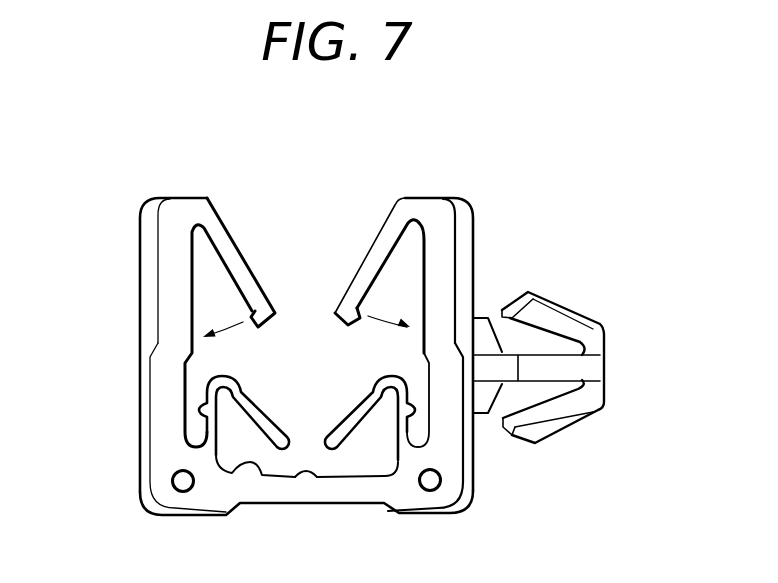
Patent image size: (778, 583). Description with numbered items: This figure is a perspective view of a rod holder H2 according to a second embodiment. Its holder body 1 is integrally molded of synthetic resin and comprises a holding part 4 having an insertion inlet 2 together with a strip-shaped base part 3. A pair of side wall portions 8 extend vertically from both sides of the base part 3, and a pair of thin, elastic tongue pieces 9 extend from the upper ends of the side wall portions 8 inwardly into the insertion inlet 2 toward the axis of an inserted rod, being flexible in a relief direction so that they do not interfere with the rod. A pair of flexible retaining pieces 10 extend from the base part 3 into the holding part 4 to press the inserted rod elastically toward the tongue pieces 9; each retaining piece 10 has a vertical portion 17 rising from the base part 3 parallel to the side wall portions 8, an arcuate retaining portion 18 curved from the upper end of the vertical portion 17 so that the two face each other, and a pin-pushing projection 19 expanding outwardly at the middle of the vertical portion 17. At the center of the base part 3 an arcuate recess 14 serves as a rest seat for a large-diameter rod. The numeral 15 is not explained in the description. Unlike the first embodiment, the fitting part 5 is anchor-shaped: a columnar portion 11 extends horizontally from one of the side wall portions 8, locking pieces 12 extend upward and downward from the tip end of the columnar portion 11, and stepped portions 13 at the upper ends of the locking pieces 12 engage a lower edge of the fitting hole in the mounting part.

The holder body 1 is at (128, 247).
The insertion inlet 2 is at (304, 258).
The base part 3 is at (242, 503).
The holding part 4 is at (327, 364).
The fitting portion 5 is at (575, 369).
The side wall portions 8 is at (167, 400).
The tongue pieces 9 is at (248, 283).
The flexible retaining pieces 10 is at (190, 437).
The columnar portion 11 is at (585, 371).
The locking pieces 12 is at (557, 323).
The stepped portions 13 is at (512, 307).
The arcuate recess 14 is at (313, 473).
The upper wall portion 15 is at (148, 277).
The vertical portions 17 is at (207, 392).
The arcuate retaining portions 18 is at (279, 436).
The pin-pushing projections 19 is at (198, 417).
The rod holder H2 is at (590, 213).